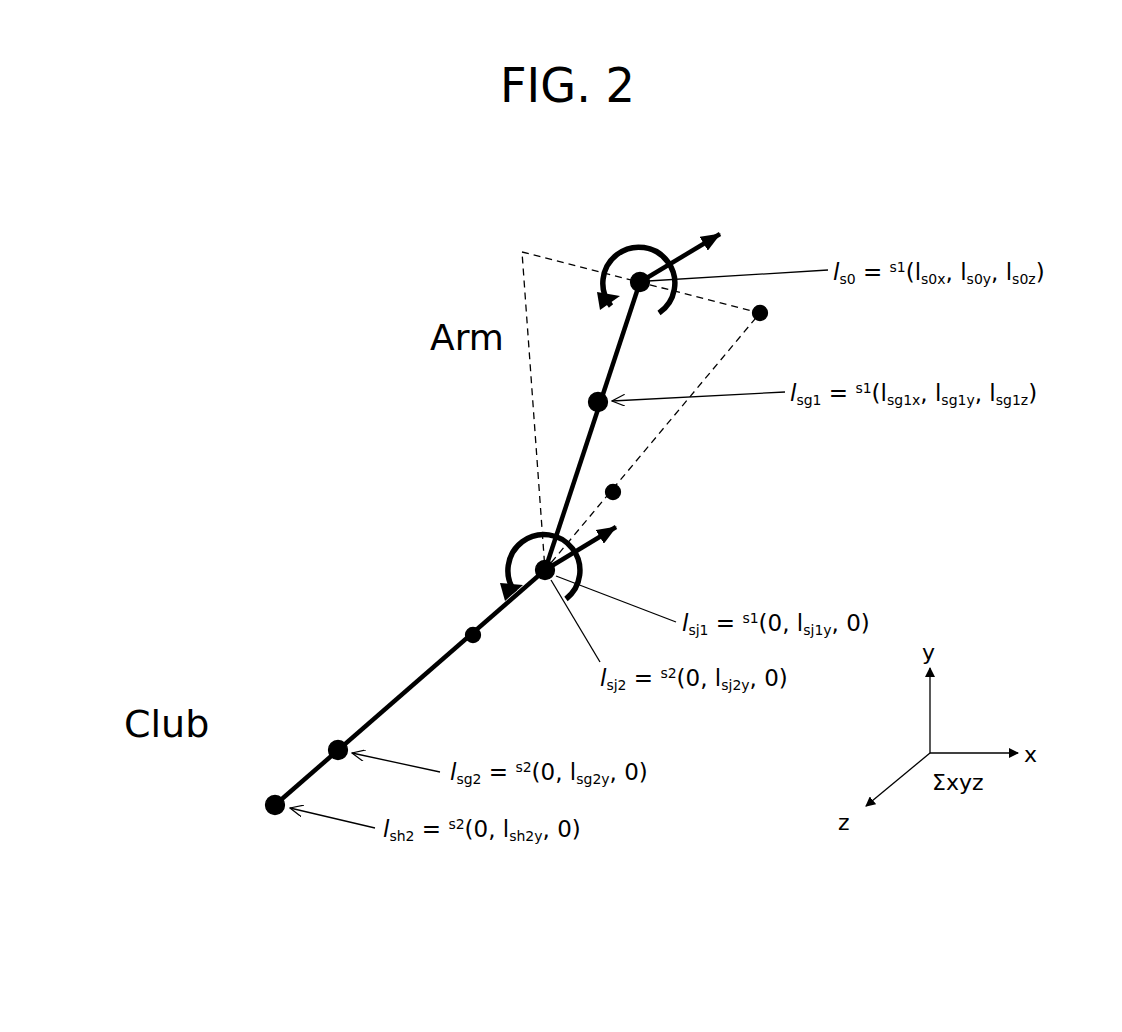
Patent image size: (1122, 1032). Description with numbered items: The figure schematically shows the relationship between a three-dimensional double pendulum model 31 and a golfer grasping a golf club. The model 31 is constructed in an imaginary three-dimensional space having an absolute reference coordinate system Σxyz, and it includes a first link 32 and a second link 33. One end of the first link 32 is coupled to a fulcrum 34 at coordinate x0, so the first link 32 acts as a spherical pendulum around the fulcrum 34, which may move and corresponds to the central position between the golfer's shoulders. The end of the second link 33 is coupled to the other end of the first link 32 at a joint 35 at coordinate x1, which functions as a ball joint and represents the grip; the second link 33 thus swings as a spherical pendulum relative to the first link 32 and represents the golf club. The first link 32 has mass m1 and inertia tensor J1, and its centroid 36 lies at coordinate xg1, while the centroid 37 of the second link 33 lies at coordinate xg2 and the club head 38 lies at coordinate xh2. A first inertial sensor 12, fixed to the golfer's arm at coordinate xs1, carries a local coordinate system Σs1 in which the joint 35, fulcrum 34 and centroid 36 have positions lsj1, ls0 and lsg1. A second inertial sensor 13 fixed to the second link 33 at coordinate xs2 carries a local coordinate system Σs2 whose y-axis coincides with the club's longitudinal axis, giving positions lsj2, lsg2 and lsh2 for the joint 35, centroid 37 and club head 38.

The first inertial sensor 12 is at (620, 489).
The second inertial sensor 13 is at (468, 628).
The three-dimensional double pendulum model 31 is at (826, 344).
The first link 32 is at (623, 340).
The second link 33 is at (430, 677).
The fulcrum 34 is at (638, 276).
The joint 35 is at (540, 565).
The centroid of the first link 36 is at (602, 410).
The centroid of the second link 37 is at (337, 741).
The club head 38 is at (273, 815).